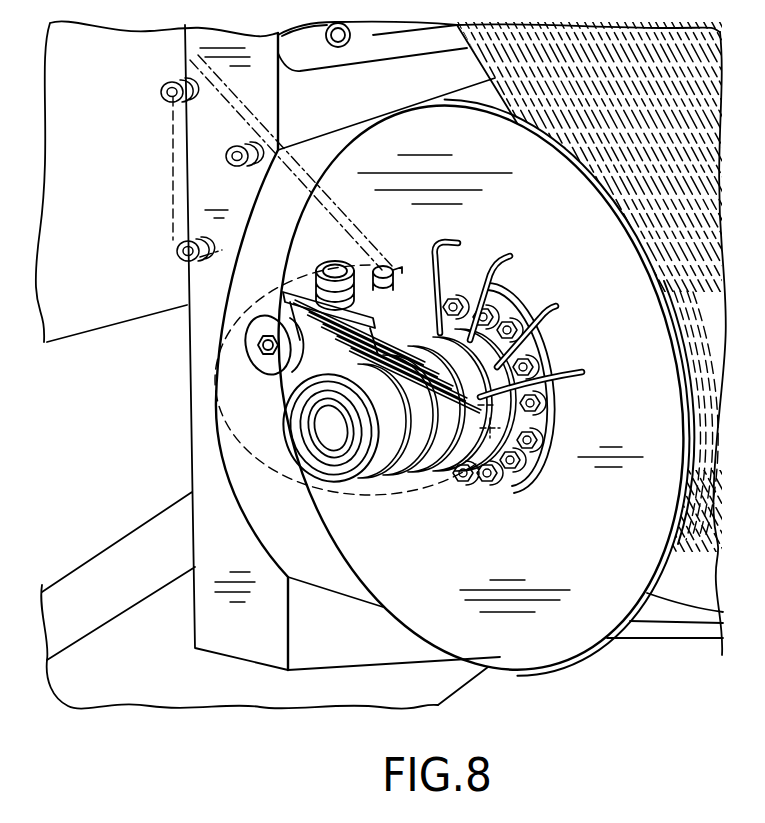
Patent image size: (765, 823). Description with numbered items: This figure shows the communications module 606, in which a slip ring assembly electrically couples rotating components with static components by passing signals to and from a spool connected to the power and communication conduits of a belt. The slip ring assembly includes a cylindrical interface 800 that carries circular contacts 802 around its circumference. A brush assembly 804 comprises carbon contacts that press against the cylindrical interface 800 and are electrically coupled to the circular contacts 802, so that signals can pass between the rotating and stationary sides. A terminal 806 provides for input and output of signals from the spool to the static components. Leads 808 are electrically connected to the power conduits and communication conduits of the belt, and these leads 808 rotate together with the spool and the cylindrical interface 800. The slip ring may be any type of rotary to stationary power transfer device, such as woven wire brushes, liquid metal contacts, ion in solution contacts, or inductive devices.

The communications module 606 is at (215, 407).
The cylindrical interface 800 is at (301, 411).
The circular contacts 802 is at (308, 425).
The brush assembly 804 is at (250, 333).
The terminal 806 is at (317, 283).
The leads 808 is at (538, 347).